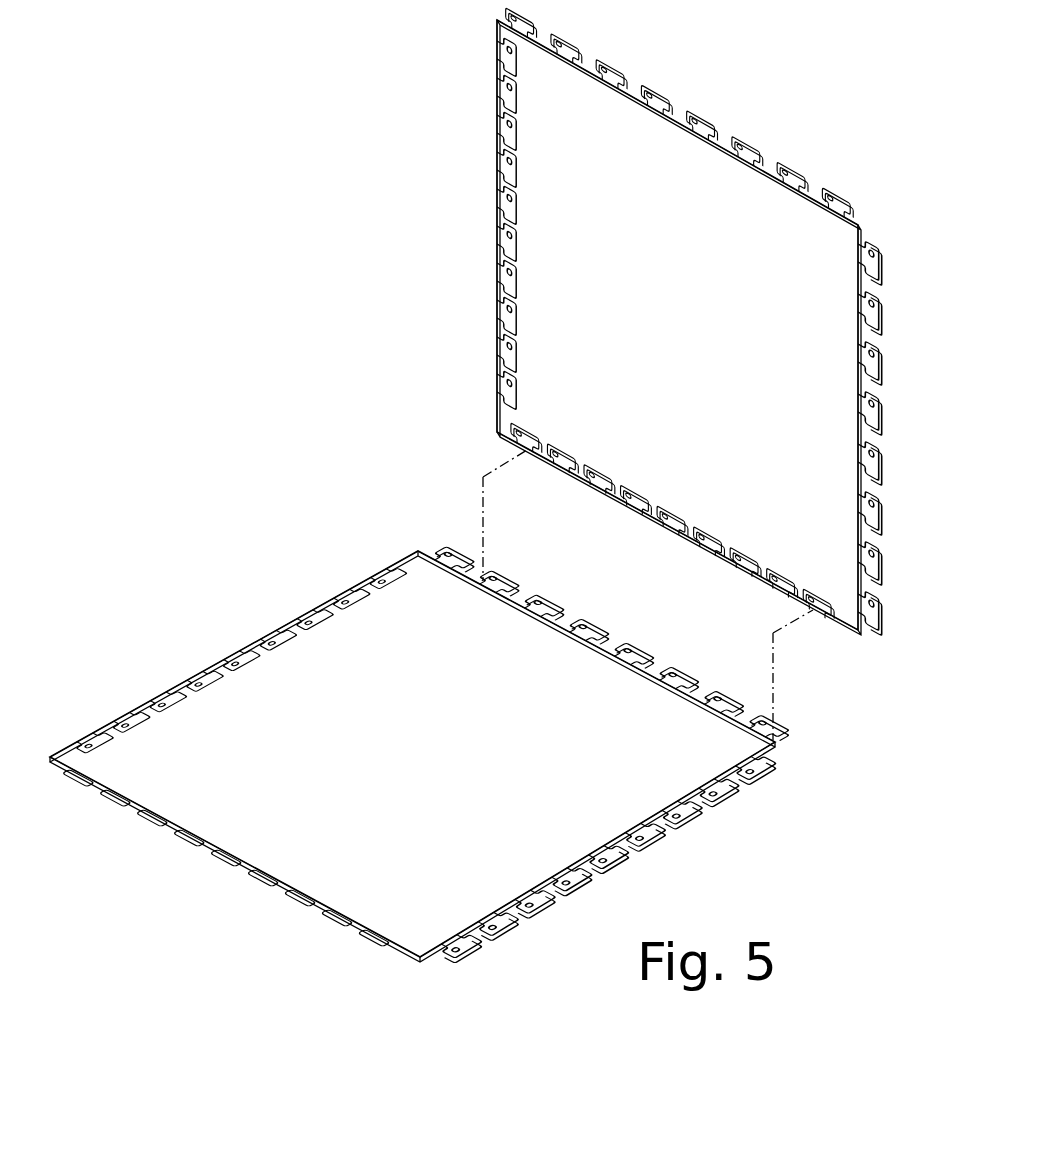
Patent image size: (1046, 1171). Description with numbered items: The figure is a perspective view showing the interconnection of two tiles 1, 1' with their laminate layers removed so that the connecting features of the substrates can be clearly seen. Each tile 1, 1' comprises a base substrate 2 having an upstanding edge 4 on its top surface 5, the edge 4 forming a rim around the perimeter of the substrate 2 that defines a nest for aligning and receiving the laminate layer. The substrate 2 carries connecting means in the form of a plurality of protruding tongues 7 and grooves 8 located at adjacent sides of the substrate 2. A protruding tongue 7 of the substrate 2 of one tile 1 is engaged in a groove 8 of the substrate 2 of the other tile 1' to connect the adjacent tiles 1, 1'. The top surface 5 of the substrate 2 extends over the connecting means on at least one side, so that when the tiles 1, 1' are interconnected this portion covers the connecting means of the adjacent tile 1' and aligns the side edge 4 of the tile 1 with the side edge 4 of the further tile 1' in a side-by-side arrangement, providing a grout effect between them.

The tile 1 is at (611, 322).
The further tile 1' is at (413, 742).
The base substrate 2 is at (539, 192).
The upstanding edge 4 is at (593, 640).
The top surface 5 is at (660, 356).
The plurality of protruding tongues 7 is at (530, 450).
The grooves 8 is at (660, 527).